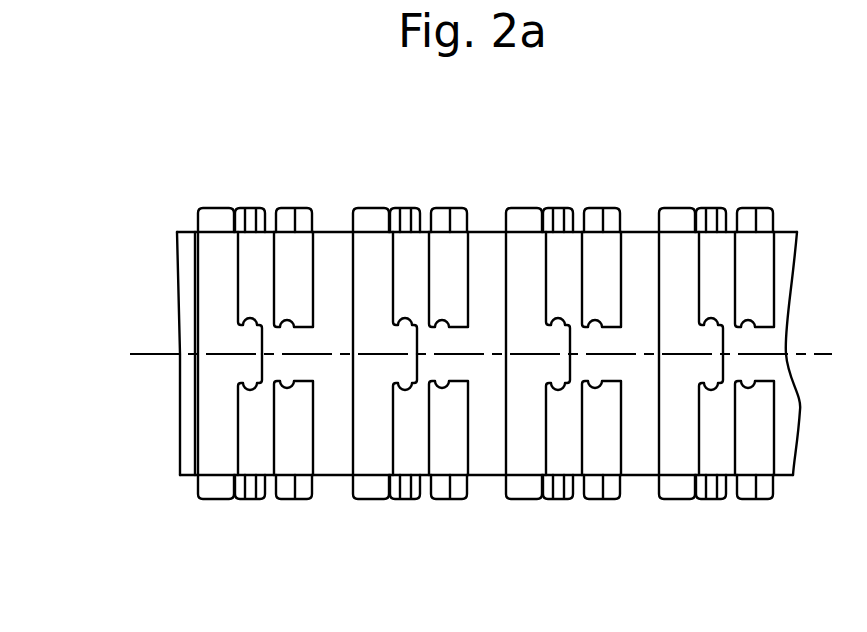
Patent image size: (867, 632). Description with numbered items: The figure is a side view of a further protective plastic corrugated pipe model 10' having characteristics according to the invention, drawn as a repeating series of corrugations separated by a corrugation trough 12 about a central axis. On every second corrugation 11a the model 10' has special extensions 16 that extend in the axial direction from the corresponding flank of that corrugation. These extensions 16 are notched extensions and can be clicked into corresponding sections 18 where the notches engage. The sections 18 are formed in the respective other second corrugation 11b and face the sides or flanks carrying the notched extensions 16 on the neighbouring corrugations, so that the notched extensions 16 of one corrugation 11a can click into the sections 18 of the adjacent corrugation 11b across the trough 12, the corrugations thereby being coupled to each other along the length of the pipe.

The protective plastic corrugated pipe model 10' is at (430, 340).
The second corrugation with extensions 11a is at (367, 503).
The second corrugation with click-in sections 11b is at (453, 502).
The corrugation trough 12 is at (637, 455).
The notched extensions 16 is at (238, 497).
The click-in sections 18 is at (283, 385).